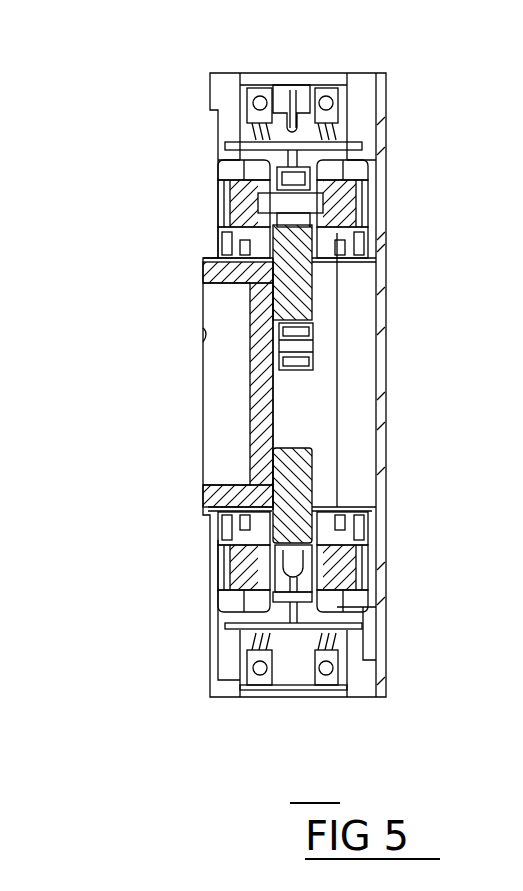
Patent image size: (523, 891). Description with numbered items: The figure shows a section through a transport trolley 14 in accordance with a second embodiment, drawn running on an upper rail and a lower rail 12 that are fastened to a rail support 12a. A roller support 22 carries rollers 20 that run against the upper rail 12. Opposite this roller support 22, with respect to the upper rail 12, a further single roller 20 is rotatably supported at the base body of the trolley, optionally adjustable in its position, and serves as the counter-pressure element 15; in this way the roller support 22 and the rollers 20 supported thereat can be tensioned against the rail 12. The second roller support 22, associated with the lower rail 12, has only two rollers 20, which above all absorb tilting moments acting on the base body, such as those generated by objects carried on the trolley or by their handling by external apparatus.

The transport trolley 14 is at (145, 49).
The roller support 22 is at (300, 137).
The rail 12 is at (293, 295).
The roller 20 is at (225, 238).
The rail support 12a is at (257, 380).
The counter-pressure element 15 is at (322, 347).